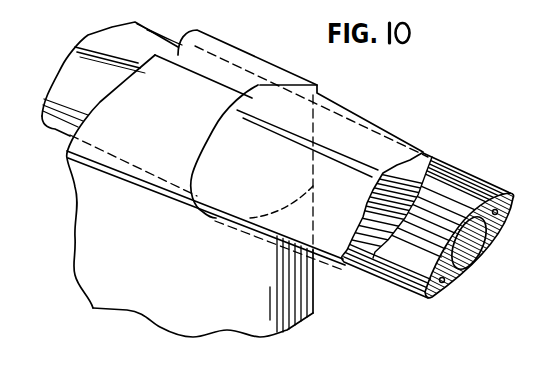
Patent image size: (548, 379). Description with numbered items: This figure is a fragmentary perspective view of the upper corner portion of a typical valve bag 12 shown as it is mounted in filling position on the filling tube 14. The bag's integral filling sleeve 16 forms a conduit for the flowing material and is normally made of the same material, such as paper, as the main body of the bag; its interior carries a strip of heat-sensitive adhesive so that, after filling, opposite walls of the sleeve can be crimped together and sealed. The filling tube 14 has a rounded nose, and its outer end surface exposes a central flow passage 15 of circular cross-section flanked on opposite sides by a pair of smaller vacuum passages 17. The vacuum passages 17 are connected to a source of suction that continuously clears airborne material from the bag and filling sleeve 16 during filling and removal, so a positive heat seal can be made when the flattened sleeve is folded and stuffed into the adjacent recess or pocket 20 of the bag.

The flexible support body 12 is at (131, 300).
The filling tube 14 is at (460, 164).
The central flow passage 15 is at (468, 256).
The filling sleeve 16 is at (360, 121).
The vacuum passages 17 is at (498, 212).
The recess or pocket 20 is at (206, 213).